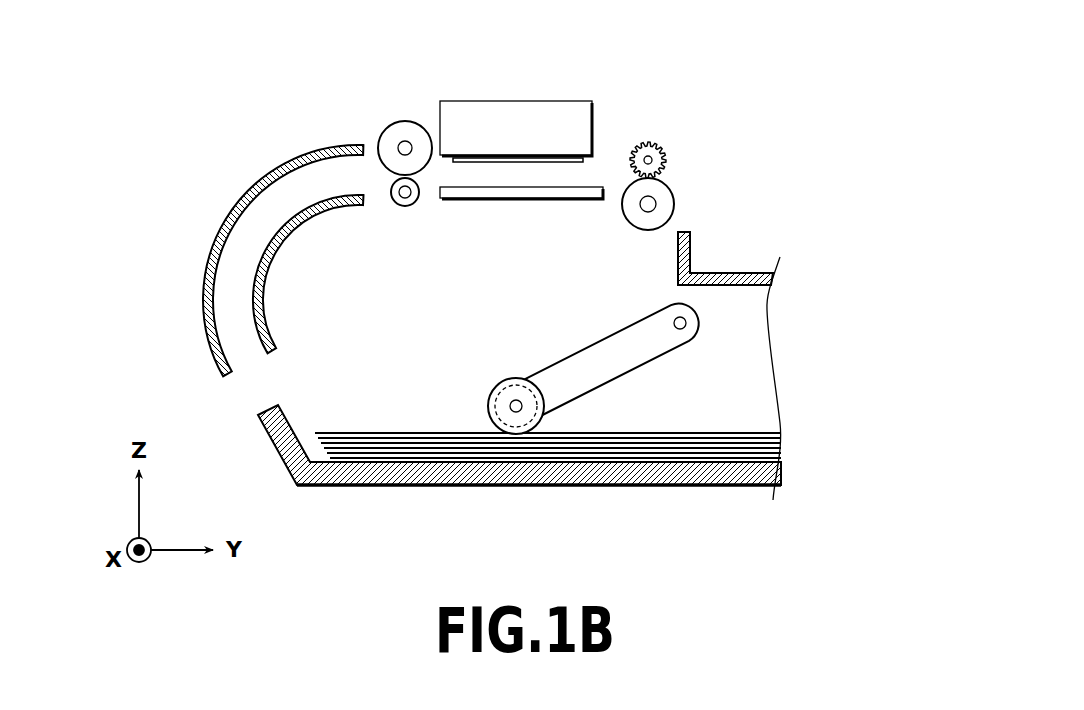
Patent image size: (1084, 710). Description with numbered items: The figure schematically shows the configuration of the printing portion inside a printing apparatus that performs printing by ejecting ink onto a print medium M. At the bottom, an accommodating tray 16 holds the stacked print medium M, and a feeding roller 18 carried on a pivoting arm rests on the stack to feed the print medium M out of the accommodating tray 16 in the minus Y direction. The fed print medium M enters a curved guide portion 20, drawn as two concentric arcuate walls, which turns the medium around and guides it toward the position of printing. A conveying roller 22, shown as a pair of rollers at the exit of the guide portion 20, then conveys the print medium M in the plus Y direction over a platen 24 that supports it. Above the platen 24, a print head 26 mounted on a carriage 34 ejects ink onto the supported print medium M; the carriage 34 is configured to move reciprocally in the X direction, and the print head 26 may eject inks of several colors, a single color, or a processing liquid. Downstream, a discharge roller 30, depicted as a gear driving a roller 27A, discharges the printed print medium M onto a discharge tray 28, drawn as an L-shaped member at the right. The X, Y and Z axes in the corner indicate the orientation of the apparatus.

The accommodating tray 16 is at (535, 485).
The feeding roller 18 is at (517, 378).
The guide portion 20 is at (228, 333).
The conveying roller 22 is at (366, 127).
The platen 24 is at (518, 198).
The print head 26 is at (577, 162).
The discharge roller 27A is at (648, 230).
The discharge tray 28 is at (737, 273).
The discharge roller 30 is at (693, 208).
The carriage 34 is at (518, 100).
The print medium M is at (717, 433).